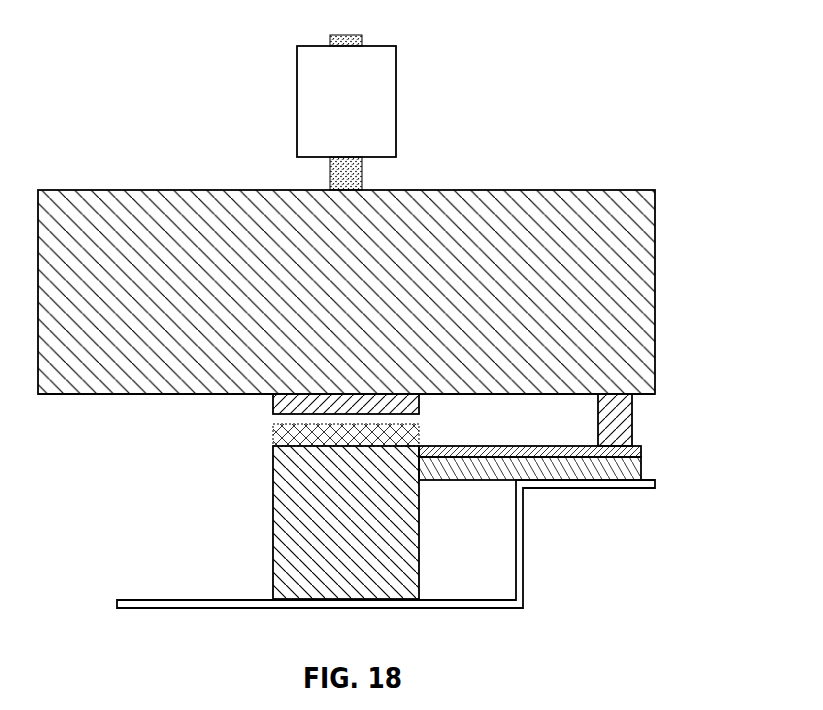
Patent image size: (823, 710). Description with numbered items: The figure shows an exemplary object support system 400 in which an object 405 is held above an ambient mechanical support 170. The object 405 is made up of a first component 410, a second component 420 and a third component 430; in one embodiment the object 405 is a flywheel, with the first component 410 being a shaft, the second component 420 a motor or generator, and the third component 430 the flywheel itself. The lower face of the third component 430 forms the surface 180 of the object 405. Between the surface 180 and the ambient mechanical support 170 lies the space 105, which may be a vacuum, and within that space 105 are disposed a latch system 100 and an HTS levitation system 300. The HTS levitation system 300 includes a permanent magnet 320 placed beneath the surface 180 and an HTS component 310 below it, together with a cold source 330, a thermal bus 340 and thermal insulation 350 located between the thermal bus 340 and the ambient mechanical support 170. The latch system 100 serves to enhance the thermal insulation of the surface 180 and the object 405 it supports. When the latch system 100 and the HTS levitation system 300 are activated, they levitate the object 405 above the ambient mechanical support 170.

The latch system 100 is at (713, 365).
The space 105 is at (151, 543).
The ambient mechanical support 170 is at (523, 542).
The surface 180 is at (197, 395).
The HTS levitation system 300 is at (197, 499).
The HTS component 310 is at (273, 434).
The permanent magnet 320 is at (418, 405).
The cold source 330 is at (273, 522).
The thermal bus 340 is at (641, 452).
The thermal insulation 350 is at (641, 473).
The object support system 400 is at (143, 75).
The object 405 is at (517, 112).
The first component 410 is at (363, 42).
The second component 420 is at (297, 100).
The third component 430 is at (92, 190).